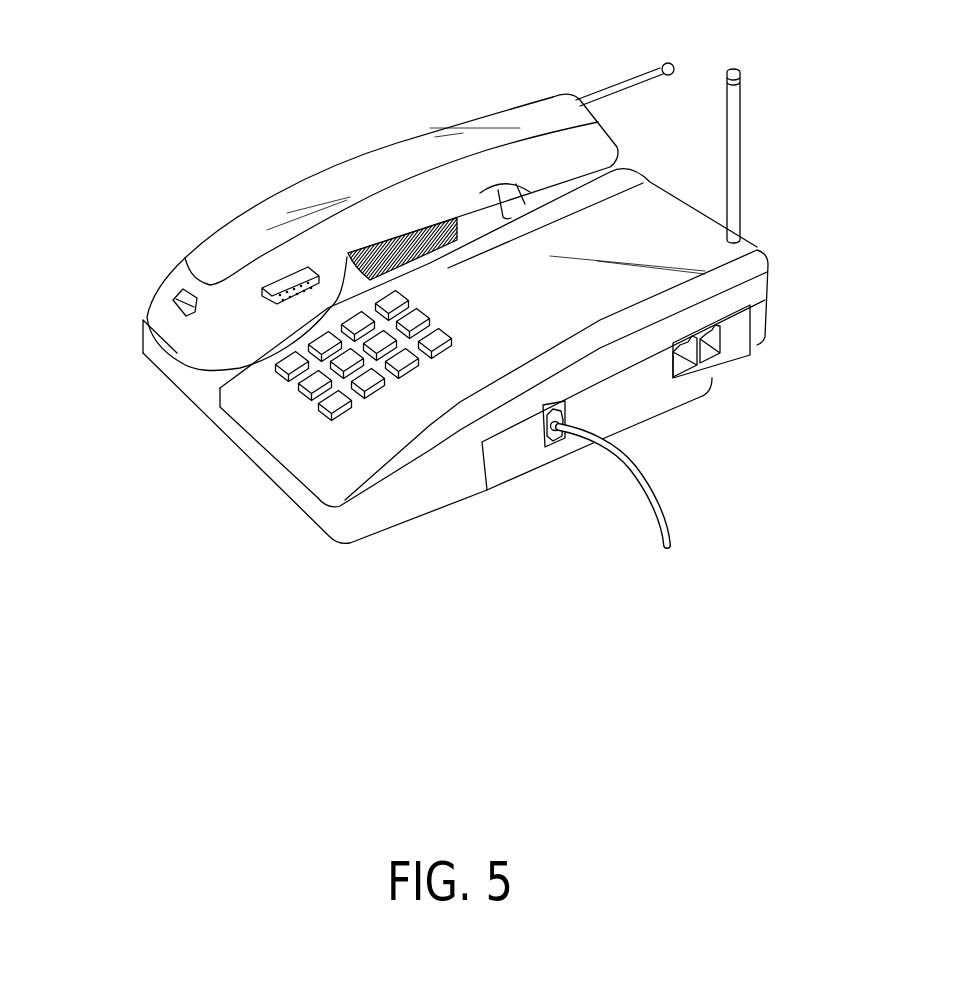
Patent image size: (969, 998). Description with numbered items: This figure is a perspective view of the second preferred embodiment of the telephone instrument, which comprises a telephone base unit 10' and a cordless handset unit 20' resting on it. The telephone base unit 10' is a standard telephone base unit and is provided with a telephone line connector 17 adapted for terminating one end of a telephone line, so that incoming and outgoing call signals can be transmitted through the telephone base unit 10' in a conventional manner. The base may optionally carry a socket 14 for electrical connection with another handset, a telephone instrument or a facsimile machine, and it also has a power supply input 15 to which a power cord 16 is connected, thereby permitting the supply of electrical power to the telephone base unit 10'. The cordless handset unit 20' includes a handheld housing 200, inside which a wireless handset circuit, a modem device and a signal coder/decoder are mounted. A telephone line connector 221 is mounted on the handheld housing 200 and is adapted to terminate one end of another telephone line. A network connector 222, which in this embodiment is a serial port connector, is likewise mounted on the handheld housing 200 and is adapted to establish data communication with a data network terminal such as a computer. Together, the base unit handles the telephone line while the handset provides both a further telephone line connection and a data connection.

The telephone base unit 10' is at (507, 366).
The socket 14 is at (693, 353).
The power supply input 15 is at (546, 443).
The power cord 16 is at (643, 497).
The telephone line connector 17 is at (713, 340).
The cordless handset unit 20' is at (363, 236).
The handheld housing 200 is at (442, 140).
The telephone line connector 221 is at (177, 297).
The network connector 222 is at (263, 268).